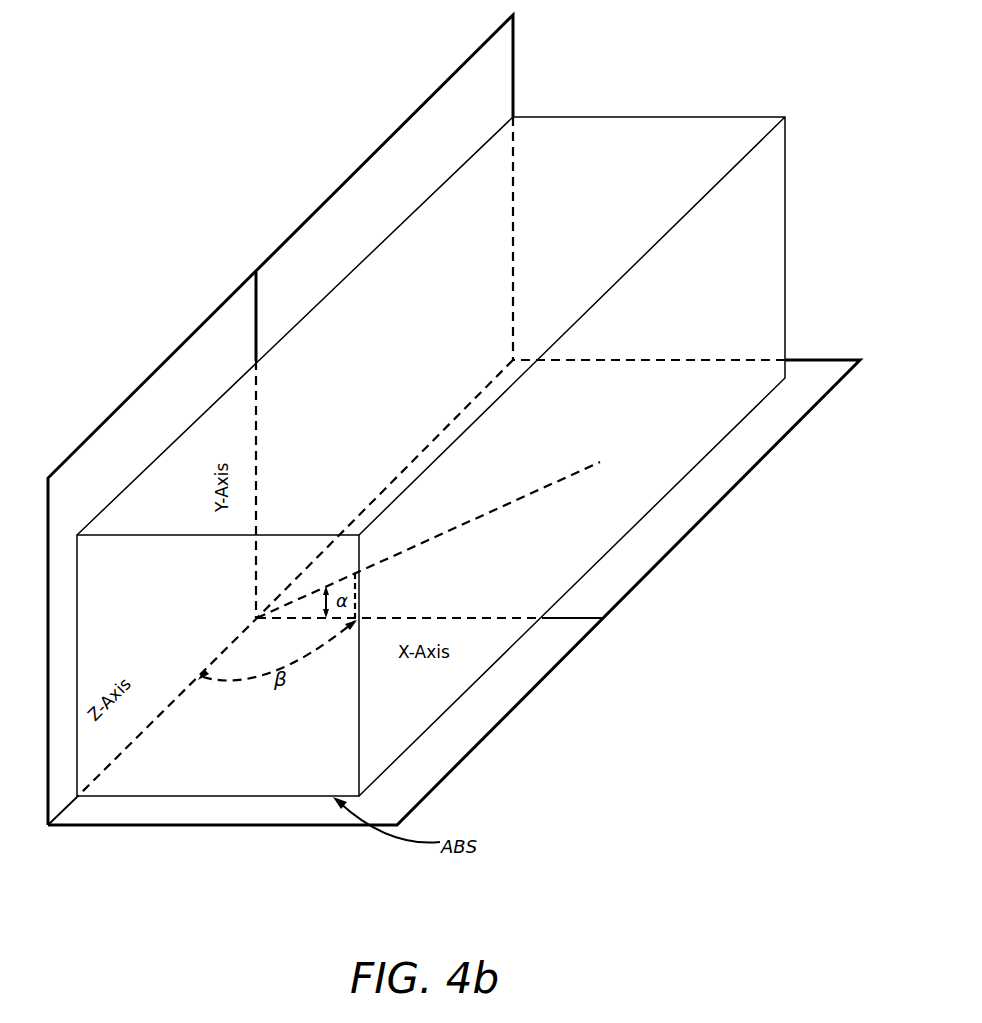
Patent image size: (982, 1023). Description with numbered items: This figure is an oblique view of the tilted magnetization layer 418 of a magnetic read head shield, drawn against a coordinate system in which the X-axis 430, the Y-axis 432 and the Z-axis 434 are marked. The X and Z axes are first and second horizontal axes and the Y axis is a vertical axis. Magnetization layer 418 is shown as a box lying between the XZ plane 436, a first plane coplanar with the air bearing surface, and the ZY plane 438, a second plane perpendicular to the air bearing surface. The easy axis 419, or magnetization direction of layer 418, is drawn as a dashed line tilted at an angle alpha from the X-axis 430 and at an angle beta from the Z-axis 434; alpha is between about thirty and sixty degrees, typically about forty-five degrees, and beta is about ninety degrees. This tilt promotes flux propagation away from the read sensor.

The tilted magnetization layer 418 is at (652, 122).
The easy axis 419 is at (580, 468).
The X-axis 430 is at (565, 616).
The Y-axis 432 is at (256, 318).
The Z-axis 434 is at (50, 823).
The XZ plane 436 is at (792, 410).
The ZY plane 438 is at (492, 64).